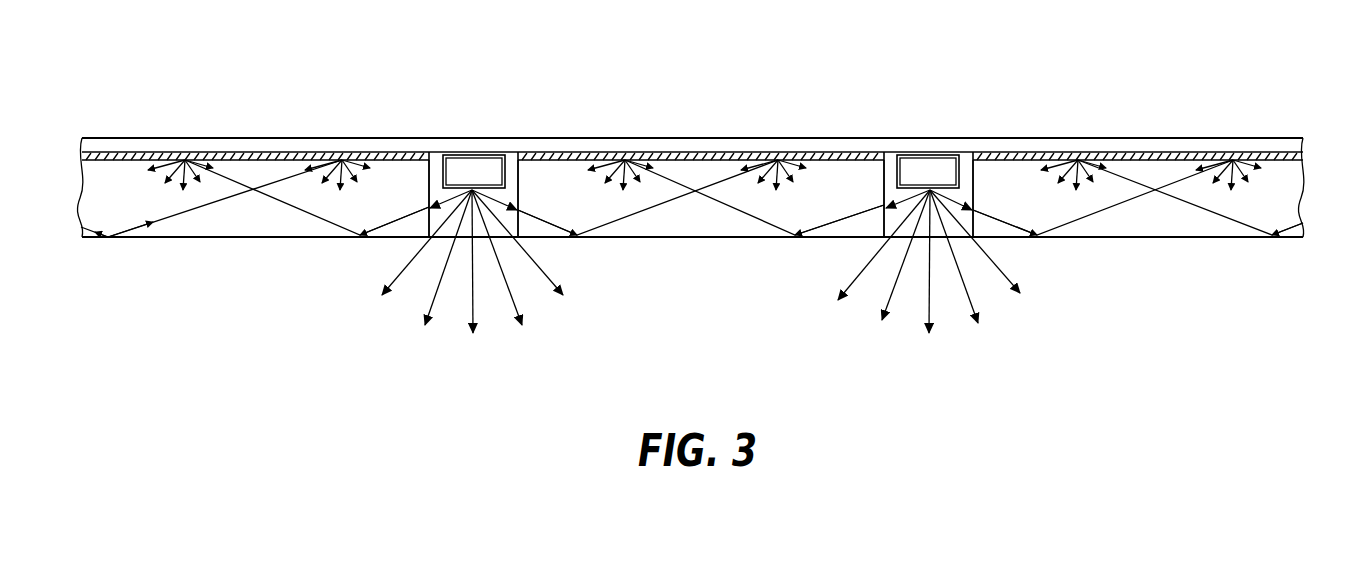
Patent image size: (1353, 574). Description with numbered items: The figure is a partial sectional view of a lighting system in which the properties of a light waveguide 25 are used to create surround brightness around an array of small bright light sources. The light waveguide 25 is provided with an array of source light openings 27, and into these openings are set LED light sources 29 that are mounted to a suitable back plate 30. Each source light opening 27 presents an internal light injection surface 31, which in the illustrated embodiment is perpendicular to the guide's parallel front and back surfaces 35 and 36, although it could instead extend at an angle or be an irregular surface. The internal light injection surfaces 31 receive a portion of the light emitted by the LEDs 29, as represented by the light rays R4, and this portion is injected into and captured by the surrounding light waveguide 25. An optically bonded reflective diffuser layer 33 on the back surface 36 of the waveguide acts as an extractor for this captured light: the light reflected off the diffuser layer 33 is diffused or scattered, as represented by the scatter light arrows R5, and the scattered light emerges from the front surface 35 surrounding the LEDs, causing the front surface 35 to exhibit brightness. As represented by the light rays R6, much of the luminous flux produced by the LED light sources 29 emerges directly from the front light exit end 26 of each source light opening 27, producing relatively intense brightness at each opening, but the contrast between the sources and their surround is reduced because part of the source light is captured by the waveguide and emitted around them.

The light waveguide 25 is at (1262, 206).
The front light exit end 26 is at (462, 240).
The source light openings 27 is at (510, 196).
The LED light sources 29 is at (468, 173).
The back plate 30 is at (1127, 146).
The internal light injection surface 31 is at (515, 173).
The reflective diffuser layer 33 is at (390, 154).
The front surface 35 is at (200, 238).
The back surface 36 is at (710, 153).
The light rays R4 is at (868, 208).
The scatter light arrows R5 is at (625, 158).
The light rays R6 is at (432, 302).